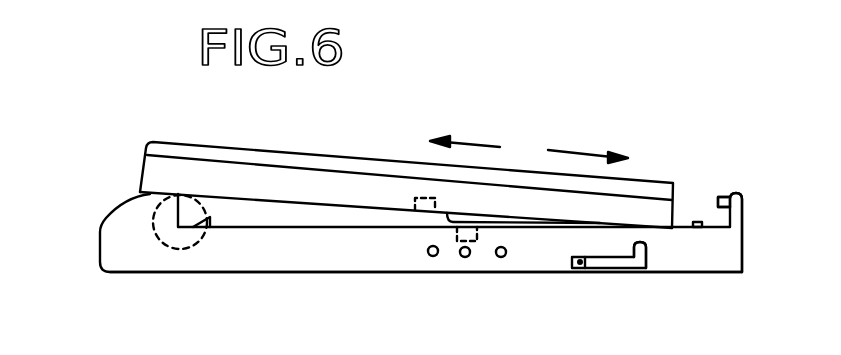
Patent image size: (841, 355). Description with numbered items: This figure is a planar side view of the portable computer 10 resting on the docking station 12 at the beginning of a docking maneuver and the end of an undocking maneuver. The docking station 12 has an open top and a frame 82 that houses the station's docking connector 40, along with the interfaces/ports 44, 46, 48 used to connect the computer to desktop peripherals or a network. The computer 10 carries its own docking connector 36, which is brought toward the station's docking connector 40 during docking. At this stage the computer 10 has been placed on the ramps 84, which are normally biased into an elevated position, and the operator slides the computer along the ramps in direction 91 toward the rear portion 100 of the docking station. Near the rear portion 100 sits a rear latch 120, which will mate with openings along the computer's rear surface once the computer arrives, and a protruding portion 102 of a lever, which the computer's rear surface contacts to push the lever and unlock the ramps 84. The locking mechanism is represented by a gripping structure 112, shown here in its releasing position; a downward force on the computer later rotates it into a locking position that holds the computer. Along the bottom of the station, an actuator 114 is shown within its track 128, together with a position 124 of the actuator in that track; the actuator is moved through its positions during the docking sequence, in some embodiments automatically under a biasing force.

The portable computer 10 is at (126, 165).
The docking station 12 is at (85, 253).
The docking connector 36 is at (434, 197).
The docking connector 40 is at (450, 232).
The interface/port 44 is at (409, 293).
The interface/port 46 is at (465, 258).
The interface/port 48 is at (501, 258).
The frame 82 is at (323, 273).
The ramps 84 is at (513, 223).
The direction 91 is at (591, 151).
The rear portion 100 is at (742, 220).
The protruding portion 102 is at (702, 222).
The gripping structure 112 is at (185, 249).
The actuator 114 is at (482, 143).
The rear latch 120 is at (727, 197).
The slider 124 is at (582, 263).
The track 128 is at (622, 262).